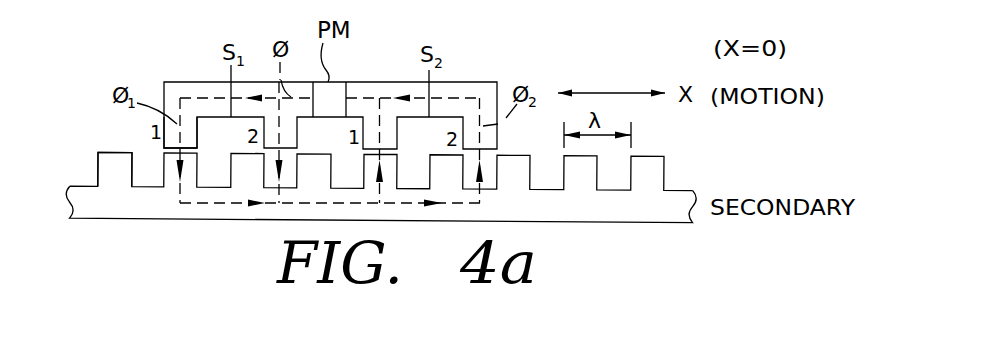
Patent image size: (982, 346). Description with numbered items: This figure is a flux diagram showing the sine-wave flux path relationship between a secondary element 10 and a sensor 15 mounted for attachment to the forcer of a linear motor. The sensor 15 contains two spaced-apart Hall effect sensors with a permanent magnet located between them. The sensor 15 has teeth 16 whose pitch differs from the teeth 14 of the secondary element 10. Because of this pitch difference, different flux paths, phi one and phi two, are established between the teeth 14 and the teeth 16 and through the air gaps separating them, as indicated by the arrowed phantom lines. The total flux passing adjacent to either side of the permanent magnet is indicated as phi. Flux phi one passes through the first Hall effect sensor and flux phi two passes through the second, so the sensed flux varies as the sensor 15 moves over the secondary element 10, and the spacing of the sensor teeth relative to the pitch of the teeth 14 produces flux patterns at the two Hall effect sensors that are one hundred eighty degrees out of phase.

The secondary element 10 is at (357, 180).
The teeth of the secondary element 14 is at (99, 167).
The sensor element 15 is at (294, 96).
The teeth of the sensor 16 is at (163, 145).